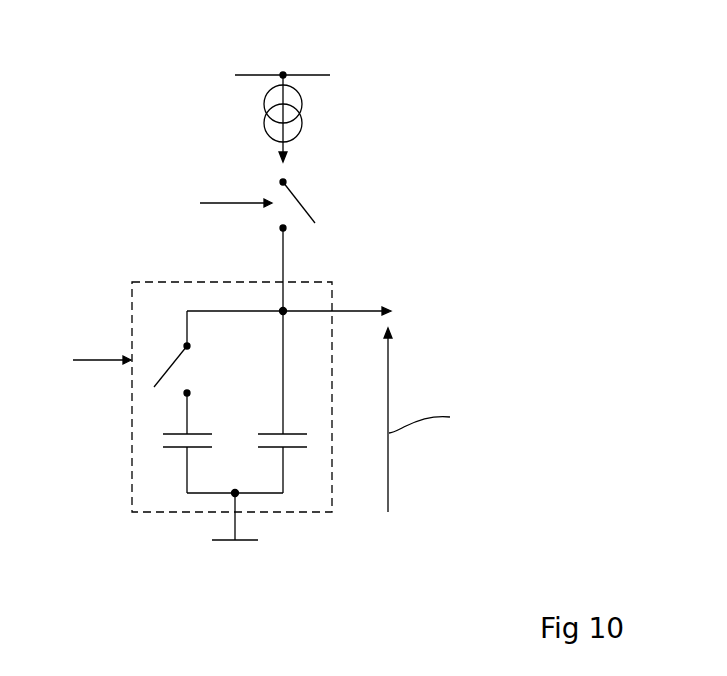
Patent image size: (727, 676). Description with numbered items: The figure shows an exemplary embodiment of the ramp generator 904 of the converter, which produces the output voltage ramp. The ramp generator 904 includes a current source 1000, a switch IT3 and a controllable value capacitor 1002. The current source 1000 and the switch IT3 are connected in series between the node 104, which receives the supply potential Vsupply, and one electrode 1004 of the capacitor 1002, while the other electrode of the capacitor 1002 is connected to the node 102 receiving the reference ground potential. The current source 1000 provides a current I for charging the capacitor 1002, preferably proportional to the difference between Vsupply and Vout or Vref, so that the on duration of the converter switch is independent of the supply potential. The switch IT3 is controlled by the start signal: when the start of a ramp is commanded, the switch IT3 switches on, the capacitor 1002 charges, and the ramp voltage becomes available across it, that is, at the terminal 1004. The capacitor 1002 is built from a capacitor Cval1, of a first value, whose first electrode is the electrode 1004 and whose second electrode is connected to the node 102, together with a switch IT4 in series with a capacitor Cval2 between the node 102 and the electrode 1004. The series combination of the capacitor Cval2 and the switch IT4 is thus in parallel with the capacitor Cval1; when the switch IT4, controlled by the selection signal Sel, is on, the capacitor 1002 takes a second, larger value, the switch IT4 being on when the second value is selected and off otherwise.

The ramp generator 904 is at (152, 111).
The node 104 is at (245, 74).
The current source 1000 is at (302, 104).
The switch IT3 is at (304, 193).
The electrode 1004 is at (284, 311).
The switch IT4 is at (187, 369).
The capacitor Cval1 is at (310, 440).
The capacitor Cval2 is at (156, 440).
The controllable value capacitor 1002 is at (333, 500).
The node 102 is at (234, 495).